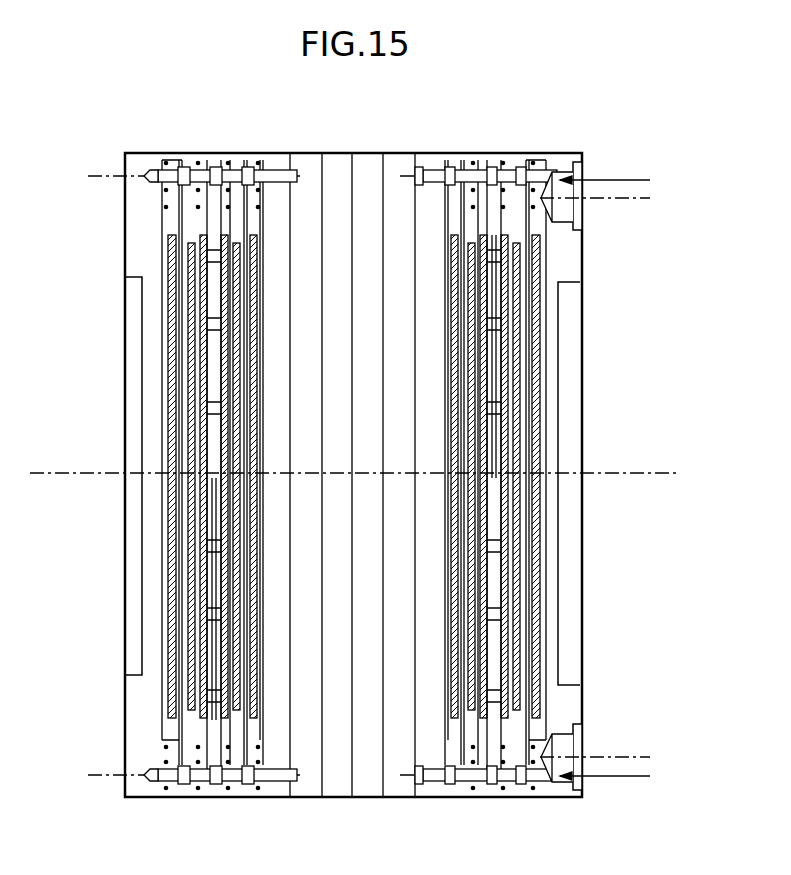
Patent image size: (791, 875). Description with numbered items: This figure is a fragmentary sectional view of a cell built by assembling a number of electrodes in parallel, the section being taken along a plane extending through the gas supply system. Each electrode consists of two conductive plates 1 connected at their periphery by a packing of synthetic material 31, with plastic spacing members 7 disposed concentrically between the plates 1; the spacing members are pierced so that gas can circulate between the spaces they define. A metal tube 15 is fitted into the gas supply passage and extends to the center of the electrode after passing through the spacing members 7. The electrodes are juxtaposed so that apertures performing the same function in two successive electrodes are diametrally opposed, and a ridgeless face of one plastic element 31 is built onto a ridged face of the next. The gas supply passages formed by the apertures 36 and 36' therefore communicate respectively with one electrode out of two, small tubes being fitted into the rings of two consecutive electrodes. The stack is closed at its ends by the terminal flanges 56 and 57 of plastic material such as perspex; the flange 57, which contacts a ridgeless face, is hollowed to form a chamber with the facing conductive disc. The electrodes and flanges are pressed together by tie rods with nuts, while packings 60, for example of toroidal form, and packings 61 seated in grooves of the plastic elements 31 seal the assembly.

The conductive plates 1 is at (532, 472).
The spacing members 7 is at (178, 570).
The metal tube 15 is at (178, 405).
The packing of synthetic material 31 is at (185, 745).
The gas supply aperture 36 is at (525, 784).
The gas supply aperture for adjacent electrodes 36' is at (525, 174).
The terminal flange 56 is at (558, 258).
The terminal flange 57 is at (148, 343).
The packings 60 is at (170, 210).
The packings 61 is at (263, 170).